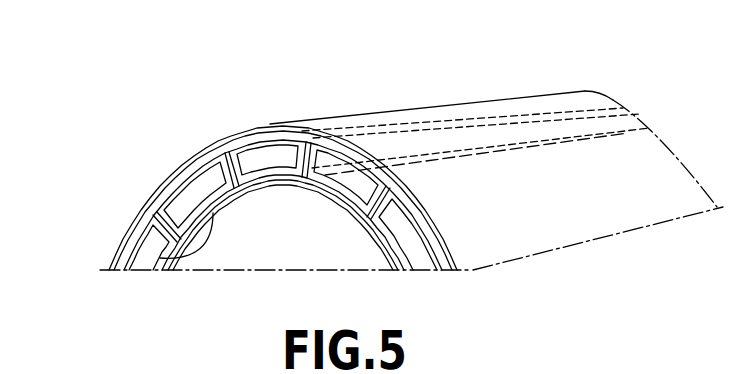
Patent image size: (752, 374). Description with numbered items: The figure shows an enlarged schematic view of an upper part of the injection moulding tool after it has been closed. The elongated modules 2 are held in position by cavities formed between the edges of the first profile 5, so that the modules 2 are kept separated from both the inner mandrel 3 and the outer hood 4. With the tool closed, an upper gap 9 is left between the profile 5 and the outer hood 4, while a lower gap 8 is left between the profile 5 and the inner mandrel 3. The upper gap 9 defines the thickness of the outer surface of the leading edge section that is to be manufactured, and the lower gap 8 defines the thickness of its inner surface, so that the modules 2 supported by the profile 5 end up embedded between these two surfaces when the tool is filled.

The elongated module 2 is at (545, 123).
The inner mandrel 3 is at (168, 257).
The outer hood 4 is at (175, 169).
The first profile 5 is at (160, 215).
The lower gap 8 is at (429, 156).
The upper gap 9 is at (464, 118).